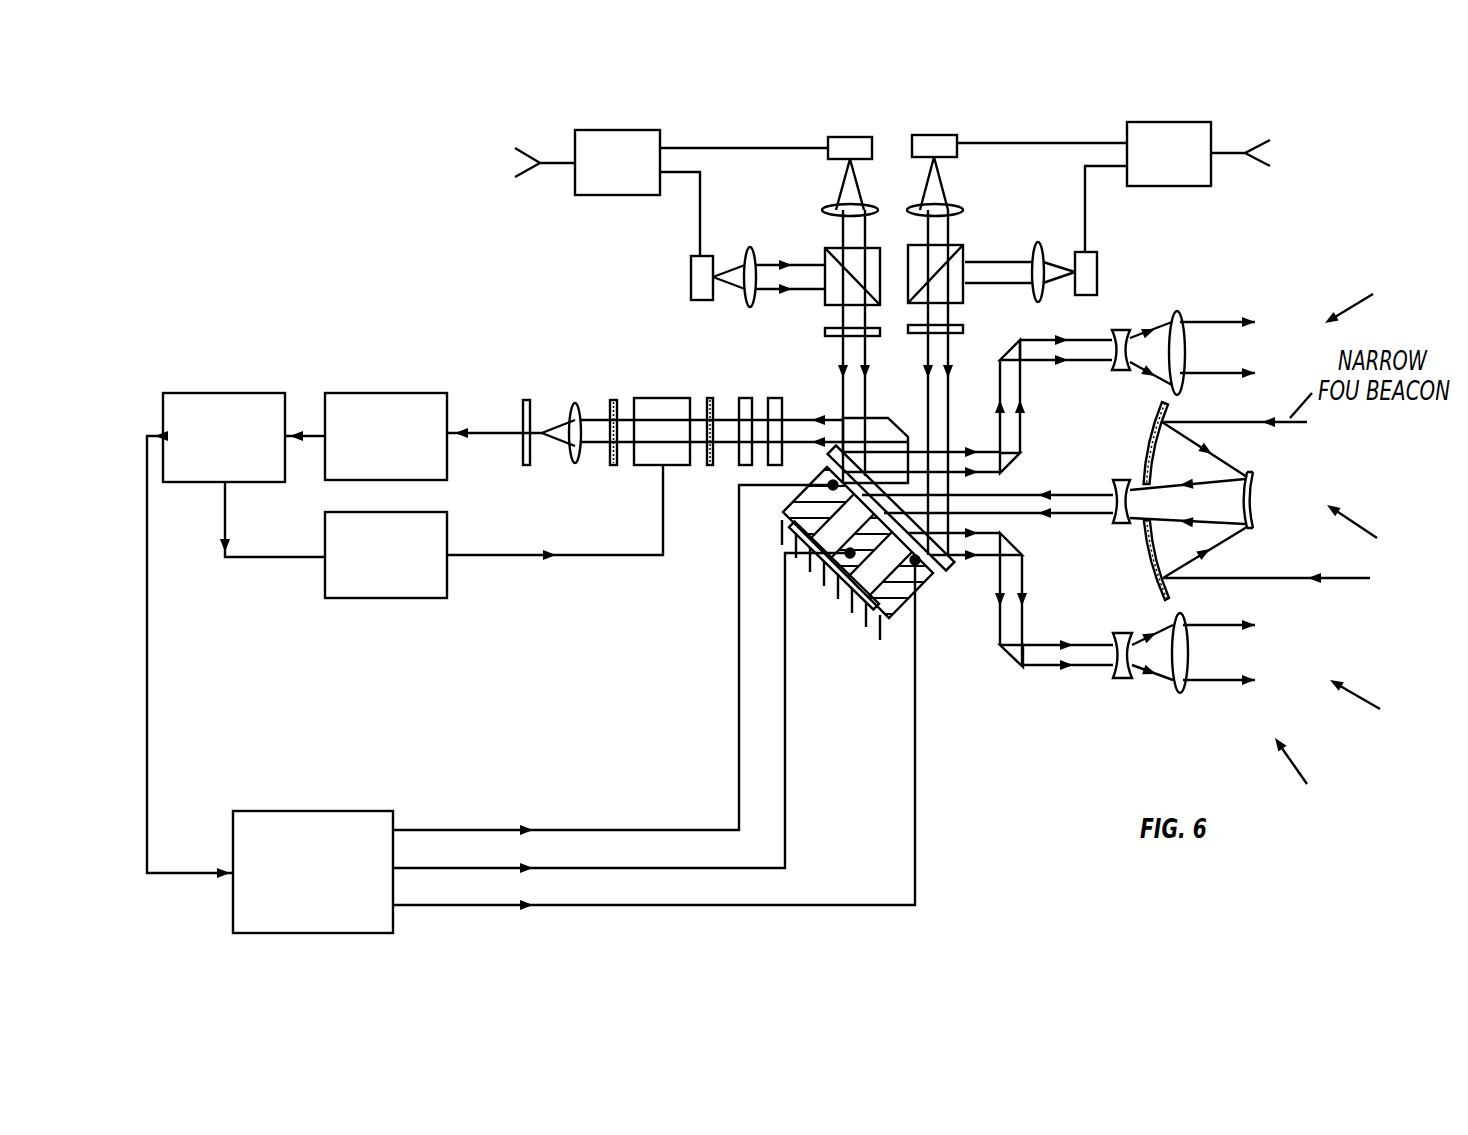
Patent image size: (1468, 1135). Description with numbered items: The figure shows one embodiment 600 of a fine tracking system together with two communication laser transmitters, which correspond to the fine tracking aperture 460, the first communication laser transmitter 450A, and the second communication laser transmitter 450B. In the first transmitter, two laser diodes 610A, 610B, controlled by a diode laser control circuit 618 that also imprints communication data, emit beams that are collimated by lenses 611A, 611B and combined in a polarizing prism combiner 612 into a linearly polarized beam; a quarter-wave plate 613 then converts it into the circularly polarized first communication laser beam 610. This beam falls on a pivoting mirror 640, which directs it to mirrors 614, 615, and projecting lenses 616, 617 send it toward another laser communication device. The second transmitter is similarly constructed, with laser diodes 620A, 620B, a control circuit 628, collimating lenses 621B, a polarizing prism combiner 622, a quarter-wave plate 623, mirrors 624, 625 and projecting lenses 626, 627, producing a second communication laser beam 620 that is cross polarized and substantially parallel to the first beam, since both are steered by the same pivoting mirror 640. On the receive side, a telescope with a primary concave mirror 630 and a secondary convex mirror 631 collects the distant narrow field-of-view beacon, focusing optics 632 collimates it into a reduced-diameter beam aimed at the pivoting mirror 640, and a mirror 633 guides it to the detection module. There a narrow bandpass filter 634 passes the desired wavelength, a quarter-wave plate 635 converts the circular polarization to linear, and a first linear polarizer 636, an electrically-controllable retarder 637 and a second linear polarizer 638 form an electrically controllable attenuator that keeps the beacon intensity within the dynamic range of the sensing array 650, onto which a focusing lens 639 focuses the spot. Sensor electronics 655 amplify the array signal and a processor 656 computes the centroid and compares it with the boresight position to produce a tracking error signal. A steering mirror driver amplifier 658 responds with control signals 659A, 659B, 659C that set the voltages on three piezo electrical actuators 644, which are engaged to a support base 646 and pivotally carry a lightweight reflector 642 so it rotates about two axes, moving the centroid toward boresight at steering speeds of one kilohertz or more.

The diode laser control circuit 618 is at (617, 129).
The laser diode 610A is at (848, 136).
The laser diode 620A is at (934, 134).
The diode laser control circuit 628 is at (1165, 121).
The collimating lens 611A is at (819, 207).
The collimating lens 621B is at (1037, 248).
The collimating lens 611B is at (752, 252).
The laser diode 610B is at (688, 288).
The laser diode 620B is at (1097, 271).
The polarizing prism combiner 612 is at (823, 299).
The quarter-wave plate 613 is at (825, 337).
The polarizing prism combiner 622 is at (965, 292).
The quarter-wave plate 623 is at (965, 329).
The projecting lens 616 is at (1120, 328).
The projecting lens 617 is at (1176, 311).
The first communication laser beam 610 is at (1221, 318).
The first communication laser transmitter 450A is at (1378, 299).
The mirror 615 is at (1024, 362).
The mirror 614 is at (1017, 458).
The focusing optics 632 is at (1121, 479).
The secondary convex mirror 631 is at (1251, 498).
The fine tracking aperture 460 is at (1372, 531).
The mirror 624 is at (1018, 545).
The primary concave mirror 630 is at (1147, 551).
The mirror 625 is at (1015, 662).
The projecting lens 626 is at (1122, 680).
The projecting lens 627 is at (1178, 693).
The second communication laser beam 620 is at (1228, 677).
The second communication laser transmitter 450B is at (1383, 706).
The fine tracking system and communication laser transmitters 600 is at (1307, 774).
The mirror 633 is at (916, 400).
The reflector 642 is at (952, 567).
The electrical actuators 644 is at (919, 582).
The support base 646 is at (880, 640).
The pivoting mirror 640 is at (884, 616).
The electrically-controllable retarder 637 is at (660, 397).
The quarter-wave plate 635 is at (740, 397).
The narrow bandpass filter 634 is at (770, 397).
The focusing lens 639 is at (575, 407).
The processor 656 is at (223, 392).
The sensor electronics 655 is at (383, 392).
The sensing array 650 is at (525, 467).
The second linear polarizer 638 is at (613, 467).
The first linear polarizer 636 is at (710, 467).
The steering mirror driver amplifier 658 is at (312, 810).
The control signal 659A is at (592, 829).
The control signal 659B is at (786, 762).
The control signal 659C is at (892, 903).